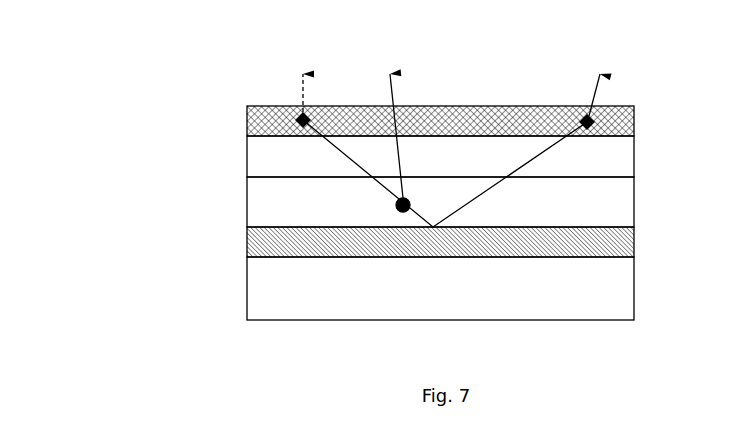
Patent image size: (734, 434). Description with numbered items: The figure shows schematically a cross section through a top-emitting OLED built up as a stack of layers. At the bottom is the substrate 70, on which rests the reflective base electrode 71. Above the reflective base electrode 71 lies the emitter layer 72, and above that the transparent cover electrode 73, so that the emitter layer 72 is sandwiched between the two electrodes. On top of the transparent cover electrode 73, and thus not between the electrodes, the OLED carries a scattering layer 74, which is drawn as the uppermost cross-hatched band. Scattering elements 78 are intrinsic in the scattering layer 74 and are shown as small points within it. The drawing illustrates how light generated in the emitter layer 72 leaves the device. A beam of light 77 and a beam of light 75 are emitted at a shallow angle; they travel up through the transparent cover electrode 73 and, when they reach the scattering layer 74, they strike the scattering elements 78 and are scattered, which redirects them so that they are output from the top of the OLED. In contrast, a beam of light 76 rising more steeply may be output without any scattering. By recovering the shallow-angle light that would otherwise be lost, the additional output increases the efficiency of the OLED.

The substrate 70 is at (620, 287).
The reflective base electrode 71 is at (620, 241).
The emitter layer 72 is at (620, 204).
The transparent cover electrode 73 is at (620, 158).
The scattering layer 74 is at (620, 123).
The beam of light 75 is at (602, 86).
The beam of light 76 is at (395, 125).
The beam of light 77 is at (303, 75).
The scattering elements 78 is at (300, 120).